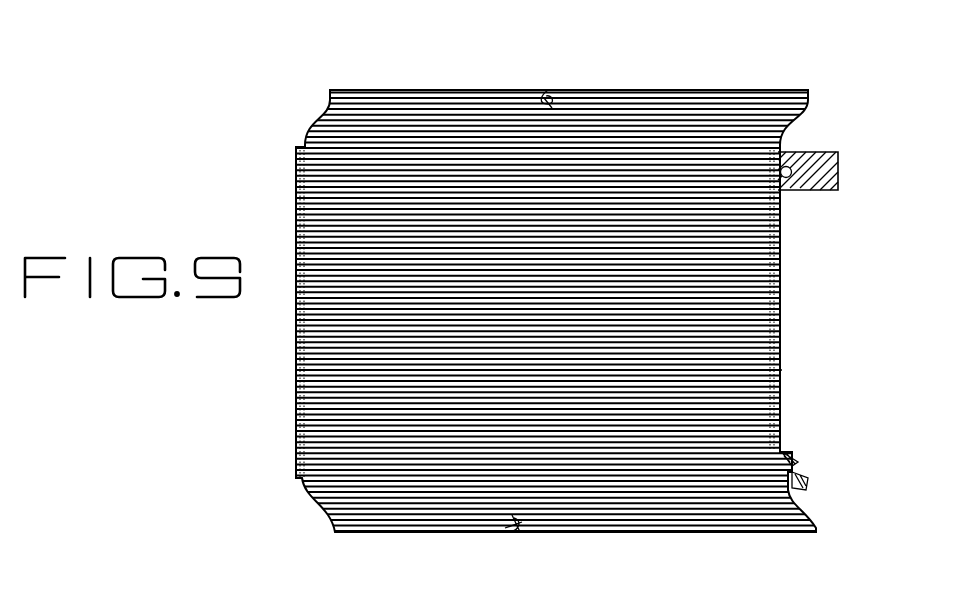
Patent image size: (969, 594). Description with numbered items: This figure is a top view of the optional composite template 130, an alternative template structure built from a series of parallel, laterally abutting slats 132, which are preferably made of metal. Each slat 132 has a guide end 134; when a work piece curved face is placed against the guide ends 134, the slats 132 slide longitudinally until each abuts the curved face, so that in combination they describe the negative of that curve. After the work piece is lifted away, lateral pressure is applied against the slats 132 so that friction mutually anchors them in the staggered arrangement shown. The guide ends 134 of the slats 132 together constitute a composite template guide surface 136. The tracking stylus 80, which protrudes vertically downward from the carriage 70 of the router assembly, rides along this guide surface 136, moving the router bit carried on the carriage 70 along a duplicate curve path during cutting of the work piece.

The composite template 130 is at (336, 76).
The slats 132 is at (546, 90).
The guide ends 134 is at (806, 480).
The composite template guide surface 136 is at (781, 371).
The carriage 70 is at (838, 178).
The tracking stylus 80 is at (787, 166).